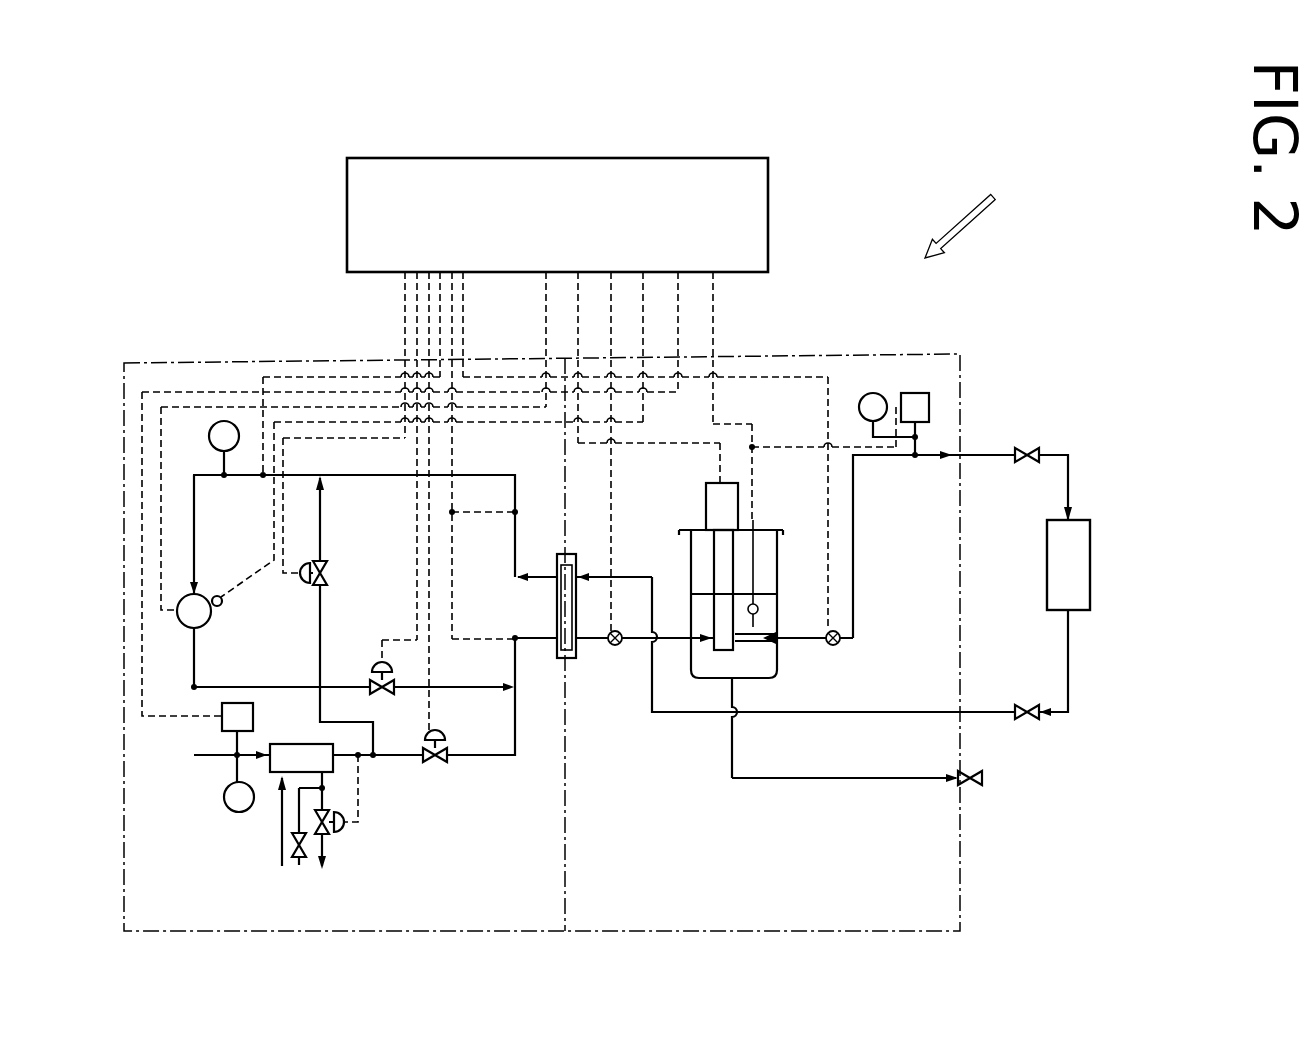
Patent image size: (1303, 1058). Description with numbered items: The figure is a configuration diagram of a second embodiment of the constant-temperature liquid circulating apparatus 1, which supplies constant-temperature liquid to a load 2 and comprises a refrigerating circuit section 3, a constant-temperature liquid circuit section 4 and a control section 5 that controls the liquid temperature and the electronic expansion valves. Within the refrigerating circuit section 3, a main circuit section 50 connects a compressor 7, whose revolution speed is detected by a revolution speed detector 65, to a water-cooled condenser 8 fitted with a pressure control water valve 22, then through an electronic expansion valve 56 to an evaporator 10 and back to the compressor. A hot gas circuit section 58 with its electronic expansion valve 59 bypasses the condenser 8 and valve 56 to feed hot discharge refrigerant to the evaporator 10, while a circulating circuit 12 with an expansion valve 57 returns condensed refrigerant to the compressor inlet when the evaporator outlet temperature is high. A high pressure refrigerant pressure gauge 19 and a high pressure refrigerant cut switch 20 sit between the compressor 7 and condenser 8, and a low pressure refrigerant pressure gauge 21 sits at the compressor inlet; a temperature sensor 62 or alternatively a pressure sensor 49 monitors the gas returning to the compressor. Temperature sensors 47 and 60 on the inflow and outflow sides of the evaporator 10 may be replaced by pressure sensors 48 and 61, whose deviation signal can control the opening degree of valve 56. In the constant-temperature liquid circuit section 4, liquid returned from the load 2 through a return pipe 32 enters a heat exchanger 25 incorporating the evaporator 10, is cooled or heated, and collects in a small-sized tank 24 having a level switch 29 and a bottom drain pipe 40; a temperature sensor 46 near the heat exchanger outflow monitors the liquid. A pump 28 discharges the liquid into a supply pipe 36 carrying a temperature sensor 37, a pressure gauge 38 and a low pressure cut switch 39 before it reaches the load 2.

The constant-temperature liquid circulating apparatus 1 is at (964, 212).
The load 2 is at (1068, 565).
The refrigerating circuit section 3 is at (148, 360).
The constant-temperature liquid circuit section 4 is at (962, 394).
The control section 5 is at (770, 213).
The compressor 7 is at (185, 625).
The condenser 8 is at (300, 744).
The evaporator 10 is at (560, 660).
The circulating circuit 12 is at (322, 622).
The high pressure refrigerant pressure gauge 19 is at (224, 797).
The high pressure refrigerant cut switch 20 is at (222, 720).
The low pressure refrigerant pressure gauge 21 is at (222, 421).
The pressure control water valve 22 is at (344, 834).
The tank 24 is at (778, 668).
The heat exchanger 25 is at (571, 656).
The pump 28 is at (712, 486).
The level switch 29 is at (758, 606).
The return pipe 32 is at (872, 714).
The supply pipe 36 is at (853, 577).
The temperature sensor 37 is at (838, 648).
The pressure gauge 38 is at (873, 393).
The low pressure cut switch 39 is at (915, 393).
The drain pipe 40 is at (872, 780).
The temperature sensor 46 is at (615, 650).
The temperature sensor 47 is at (512, 641).
The pressure sensor 48 is at (526, 620).
The pressure sensor 49 is at (224, 514).
The main circuit section 50 is at (500, 762).
The electronic expansion valve 56 is at (435, 770).
The expansion valve 57 is at (303, 584).
The hot gas circuit section 58 is at (250, 687).
The electronic expansion valve 59 is at (386, 698).
The temperature sensor 60 is at (515, 505).
The pressure sensor 61 is at (586, 529).
The temperature sensor 62 is at (261, 478).
The revolution speed detector 65 is at (218, 608).